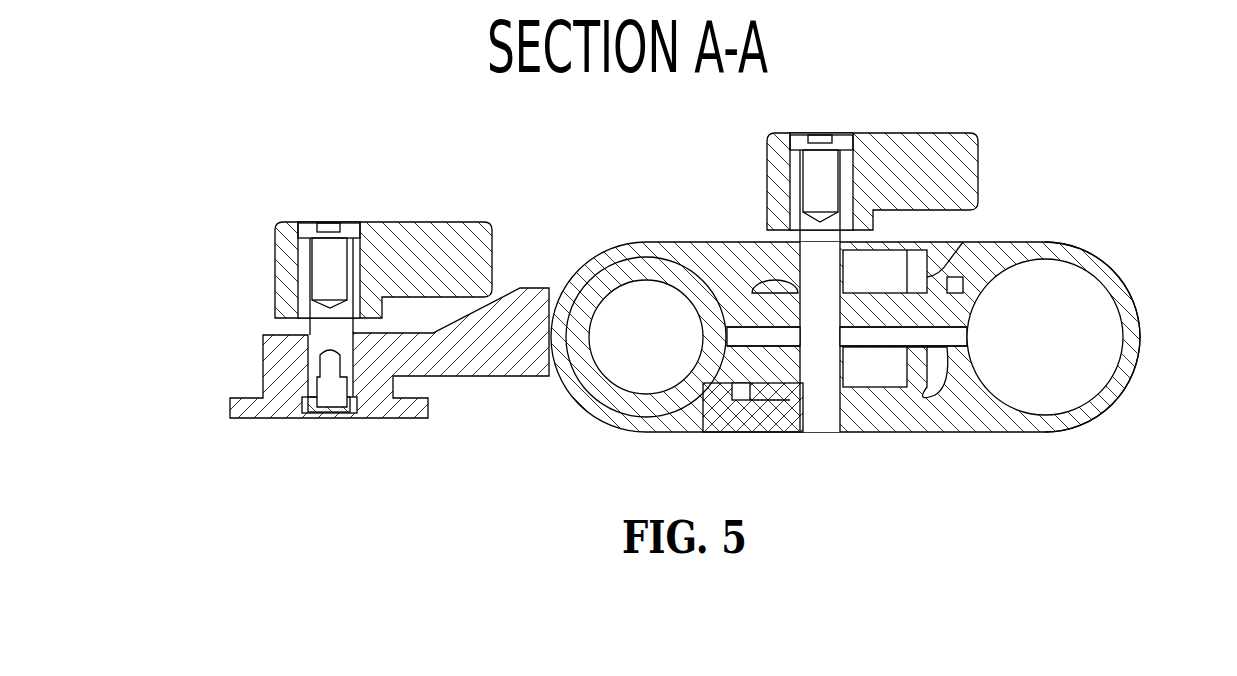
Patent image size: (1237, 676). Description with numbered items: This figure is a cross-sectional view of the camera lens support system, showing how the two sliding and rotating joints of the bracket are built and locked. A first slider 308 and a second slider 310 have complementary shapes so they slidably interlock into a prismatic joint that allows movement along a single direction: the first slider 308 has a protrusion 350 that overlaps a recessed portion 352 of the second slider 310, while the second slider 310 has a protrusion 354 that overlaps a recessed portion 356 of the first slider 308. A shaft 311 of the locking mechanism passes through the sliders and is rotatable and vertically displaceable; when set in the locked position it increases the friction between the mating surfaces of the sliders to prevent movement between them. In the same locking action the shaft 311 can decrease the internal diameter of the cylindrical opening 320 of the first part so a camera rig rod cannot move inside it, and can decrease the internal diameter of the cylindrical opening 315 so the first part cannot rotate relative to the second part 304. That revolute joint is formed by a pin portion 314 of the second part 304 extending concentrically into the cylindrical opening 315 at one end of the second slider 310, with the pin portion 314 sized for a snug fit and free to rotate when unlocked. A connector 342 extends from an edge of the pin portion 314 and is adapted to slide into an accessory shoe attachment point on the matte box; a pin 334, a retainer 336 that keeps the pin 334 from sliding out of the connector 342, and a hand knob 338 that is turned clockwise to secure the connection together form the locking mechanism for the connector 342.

The second part 304 is at (443, 373).
The first slider 308 is at (1138, 325).
The second slider 310 is at (665, 240).
The shaft 311 is at (818, 425).
The pin portion 314 is at (615, 400).
The cylindrical opening 315 is at (664, 345).
The cylindrical opening 320 is at (1070, 351).
The pin 334 is at (313, 342).
The retainer 336 is at (328, 420).
The hand knob 338 is at (458, 222).
The connector 342 is at (379, 415).
The protrusion 350 is at (742, 423).
The recessed portion 352 is at (782, 370).
The protrusion 354 is at (962, 250).
The recessed portion 356 is at (940, 307).